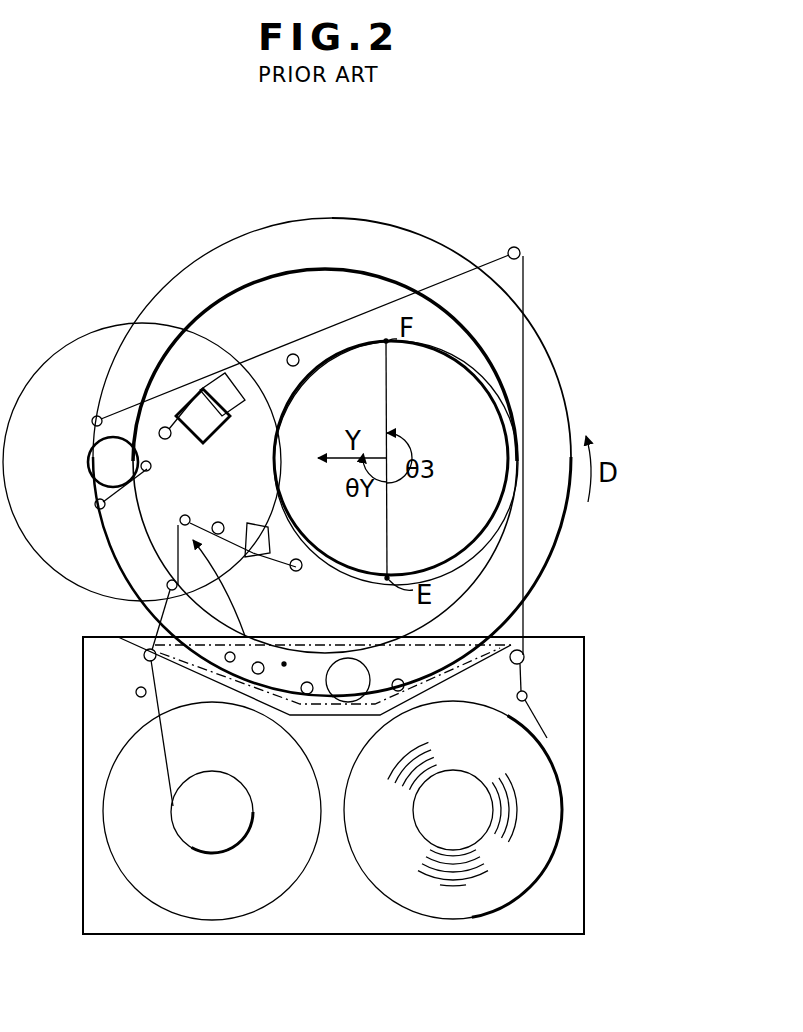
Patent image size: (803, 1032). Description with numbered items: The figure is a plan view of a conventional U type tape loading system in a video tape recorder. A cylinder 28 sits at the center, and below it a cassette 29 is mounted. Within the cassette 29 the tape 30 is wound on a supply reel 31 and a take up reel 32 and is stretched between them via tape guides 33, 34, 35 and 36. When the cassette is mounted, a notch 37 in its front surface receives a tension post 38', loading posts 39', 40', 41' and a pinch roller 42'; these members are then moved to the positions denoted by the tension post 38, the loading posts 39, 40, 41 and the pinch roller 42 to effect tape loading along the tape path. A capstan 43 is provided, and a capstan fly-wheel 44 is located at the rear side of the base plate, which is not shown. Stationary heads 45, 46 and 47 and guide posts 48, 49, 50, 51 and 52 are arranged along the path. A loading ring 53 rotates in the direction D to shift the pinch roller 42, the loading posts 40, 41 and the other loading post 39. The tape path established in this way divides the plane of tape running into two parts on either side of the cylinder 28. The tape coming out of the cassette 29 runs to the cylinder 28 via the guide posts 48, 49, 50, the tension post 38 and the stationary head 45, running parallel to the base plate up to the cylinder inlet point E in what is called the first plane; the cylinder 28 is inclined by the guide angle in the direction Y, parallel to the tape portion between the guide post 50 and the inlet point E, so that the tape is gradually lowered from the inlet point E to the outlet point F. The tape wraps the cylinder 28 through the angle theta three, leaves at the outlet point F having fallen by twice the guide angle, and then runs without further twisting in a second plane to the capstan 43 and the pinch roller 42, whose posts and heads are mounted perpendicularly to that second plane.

The cylinder 28 is at (440, 560).
The cassette 29 is at (523, 936).
The tape 30 is at (165, 772).
The supply reel 31 is at (188, 832).
The take up reel 32 is at (430, 832).
The tape guide 33 is at (136, 692).
The tape guide 34 is at (144, 655).
The tape guide 35 is at (525, 655).
The tape guide 36 is at (528, 696).
The notch 37 is at (285, 662).
The tension post 38 is at (145, 535).
The tension post 38' is at (247, 626).
The loading post 39 is at (543, 445).
The loading post 39' is at (212, 683).
The loading post 40 is at (65, 421).
The loading post 40' is at (329, 652).
The loading post 41 is at (67, 505).
The loading post 41' is at (444, 689).
The pinch roller 42 is at (88, 462).
The pinch roller 42' is at (369, 651).
The capstan 43 is at (148, 471).
The capstan fly-wheel 44 is at (86, 352).
The stationary head 45 is at (254, 524).
The stationary head 46 is at (254, 382).
The stationary head 47 is at (192, 400).
The guide post 48 is at (167, 590).
The guide post 49 is at (216, 522).
The guide post 50 is at (300, 571).
The guide post 51 is at (293, 354).
The guide post 52 is at (169, 439).
The loading ring 53 is at (567, 408).